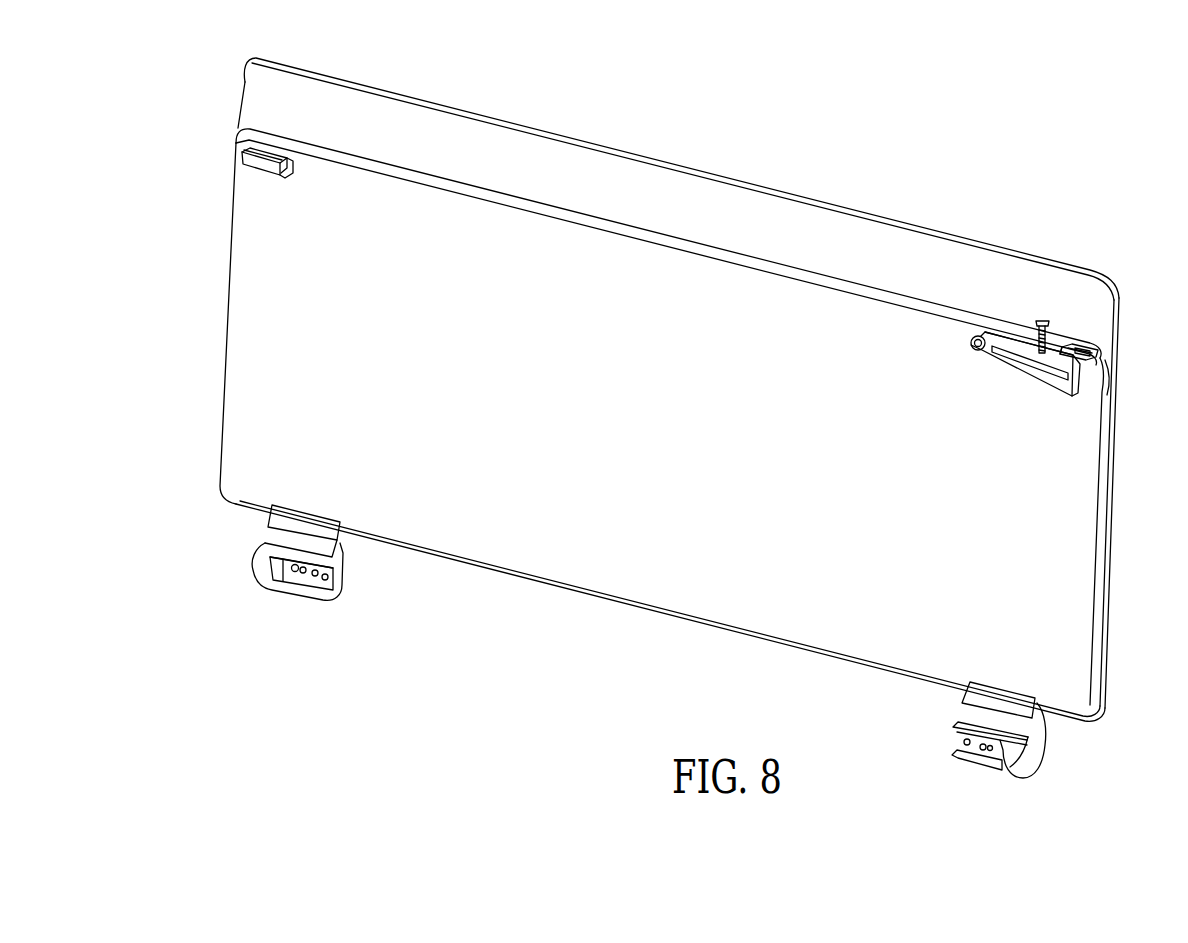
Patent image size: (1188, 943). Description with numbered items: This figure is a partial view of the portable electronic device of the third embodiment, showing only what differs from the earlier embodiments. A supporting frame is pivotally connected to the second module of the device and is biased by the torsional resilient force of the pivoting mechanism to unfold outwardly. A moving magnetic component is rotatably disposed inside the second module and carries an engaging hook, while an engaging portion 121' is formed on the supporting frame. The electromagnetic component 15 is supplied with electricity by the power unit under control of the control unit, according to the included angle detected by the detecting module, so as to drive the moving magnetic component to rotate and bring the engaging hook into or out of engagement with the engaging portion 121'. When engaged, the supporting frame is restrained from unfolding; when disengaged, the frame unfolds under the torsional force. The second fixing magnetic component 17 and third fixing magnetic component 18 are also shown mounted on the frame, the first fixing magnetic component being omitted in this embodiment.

The electromagnetic component 15 is at (1043, 320).
The second fixing magnetic component 17 is at (262, 166).
The third fixing magnetic component 18 is at (290, 170).
The engaging portion 121' is at (1131, 352).